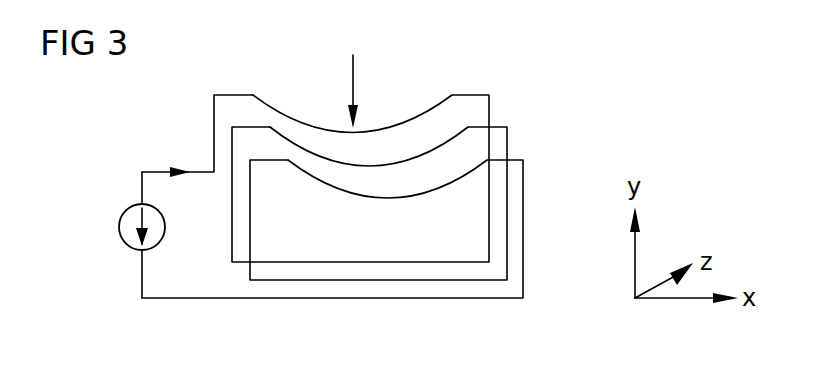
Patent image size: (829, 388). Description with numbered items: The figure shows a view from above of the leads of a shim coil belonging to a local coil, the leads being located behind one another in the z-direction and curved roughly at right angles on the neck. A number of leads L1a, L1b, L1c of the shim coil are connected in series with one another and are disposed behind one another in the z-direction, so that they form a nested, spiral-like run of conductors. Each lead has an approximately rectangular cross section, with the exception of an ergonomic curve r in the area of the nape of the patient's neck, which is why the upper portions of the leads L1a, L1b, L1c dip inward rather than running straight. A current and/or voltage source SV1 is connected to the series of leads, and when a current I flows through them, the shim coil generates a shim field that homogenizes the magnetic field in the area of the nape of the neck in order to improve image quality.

The current and/or voltage source SV1 is at (118, 227).
The lead of shim coil L1a is at (516, 160).
The lead of shim coil L1b is at (500, 127).
The lead of shim coil L1c is at (470, 94).
The current I is at (197, 136).
The ergonomic curve r is at (360, 91).